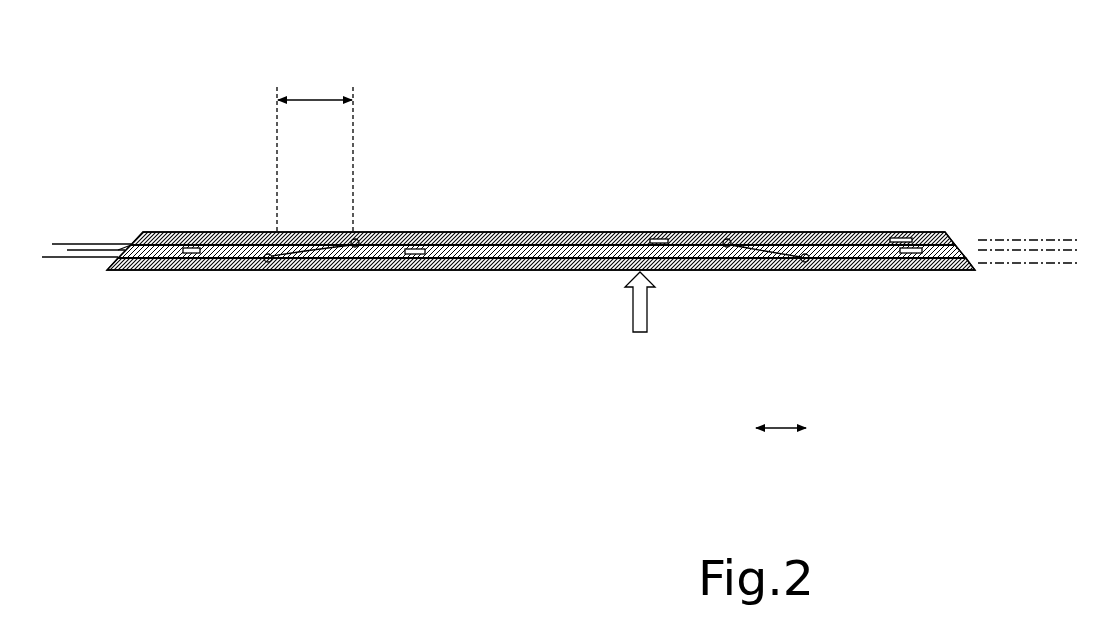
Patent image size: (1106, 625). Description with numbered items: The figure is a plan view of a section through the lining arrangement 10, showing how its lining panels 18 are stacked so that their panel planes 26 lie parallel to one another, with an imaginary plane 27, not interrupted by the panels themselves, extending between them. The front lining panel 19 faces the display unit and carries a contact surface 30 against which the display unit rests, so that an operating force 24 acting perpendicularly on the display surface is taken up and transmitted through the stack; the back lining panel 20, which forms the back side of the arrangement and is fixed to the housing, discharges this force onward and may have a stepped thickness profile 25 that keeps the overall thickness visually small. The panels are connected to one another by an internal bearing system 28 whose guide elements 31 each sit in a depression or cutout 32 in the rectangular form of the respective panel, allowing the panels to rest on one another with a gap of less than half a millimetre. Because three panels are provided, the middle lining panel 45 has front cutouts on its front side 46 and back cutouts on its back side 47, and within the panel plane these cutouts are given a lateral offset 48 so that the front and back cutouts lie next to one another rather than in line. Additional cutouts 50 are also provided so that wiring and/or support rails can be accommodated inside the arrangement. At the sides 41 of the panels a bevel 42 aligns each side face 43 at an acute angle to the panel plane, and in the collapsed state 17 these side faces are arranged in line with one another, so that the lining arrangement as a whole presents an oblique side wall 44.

The lining arrangement 10 is at (418, 78).
The collapsed state 17 is at (897, 115).
The lining panels 18 is at (517, 232).
The front lining panel 19 is at (195, 272).
The back lining panel 20 is at (325, 232).
The operating force 24 is at (630, 313).
The stepped thickness profile 25 is at (263, 230).
The panel planes 26 is at (1040, 240).
The imaginary plane 27 is at (57, 258).
The internal bearing system 28 is at (337, 232).
The contact surface 30 is at (450, 272).
The guide elements 31 is at (265, 268).
The cutouts 32 is at (280, 232).
The sides 41 is at (148, 190).
The bevel 42 is at (133, 245).
The side face 43 is at (120, 250).
The oblique side wall 44 is at (63, 183).
The lining panel 45 is at (462, 232).
The front side 46 is at (497, 265).
The back side 47 is at (577, 232).
The lateral offset 48 is at (310, 100).
The additional cutouts 50 is at (180, 242).